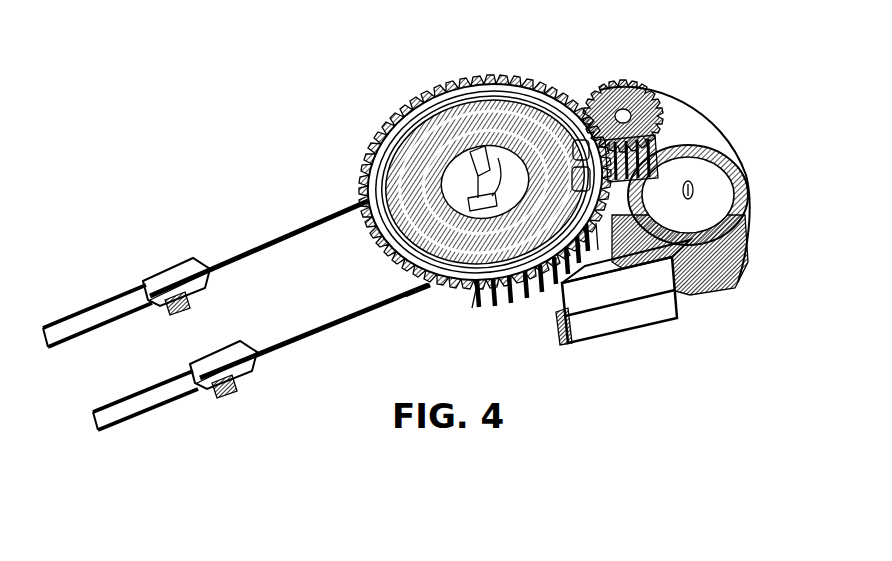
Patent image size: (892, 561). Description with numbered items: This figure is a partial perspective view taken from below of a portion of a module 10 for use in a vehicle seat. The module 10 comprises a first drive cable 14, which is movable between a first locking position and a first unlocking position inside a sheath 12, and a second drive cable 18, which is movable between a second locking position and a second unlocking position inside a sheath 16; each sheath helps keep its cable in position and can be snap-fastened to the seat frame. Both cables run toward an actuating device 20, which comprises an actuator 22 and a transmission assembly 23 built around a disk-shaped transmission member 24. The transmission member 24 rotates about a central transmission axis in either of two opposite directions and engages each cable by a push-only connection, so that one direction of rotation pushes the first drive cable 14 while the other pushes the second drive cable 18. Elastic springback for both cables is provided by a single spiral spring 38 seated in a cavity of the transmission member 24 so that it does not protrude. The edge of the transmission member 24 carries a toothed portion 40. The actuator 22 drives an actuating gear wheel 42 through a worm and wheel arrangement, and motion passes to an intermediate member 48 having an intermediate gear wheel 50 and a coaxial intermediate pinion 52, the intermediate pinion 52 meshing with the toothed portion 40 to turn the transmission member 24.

The module 10 is at (322, 102).
The sheath 12 is at (170, 435).
The first drive cable 14 is at (281, 348).
The sheath 16 is at (95, 276).
The second drive cable 18 is at (243, 248).
The actuating device 20 is at (783, 48).
The actuator 22 is at (660, 290).
The transmission assembly 23 is at (692, 88).
The transmission member 24 is at (453, 290).
The elastic springback device 38 is at (512, 113).
The toothed portion 40 is at (463, 75).
The actuating gear wheel 42 is at (723, 152).
The intermediate member 48 is at (657, 96).
The intermediate gear wheel 50 is at (622, 85).
The intermediate pinion 52 is at (688, 112).